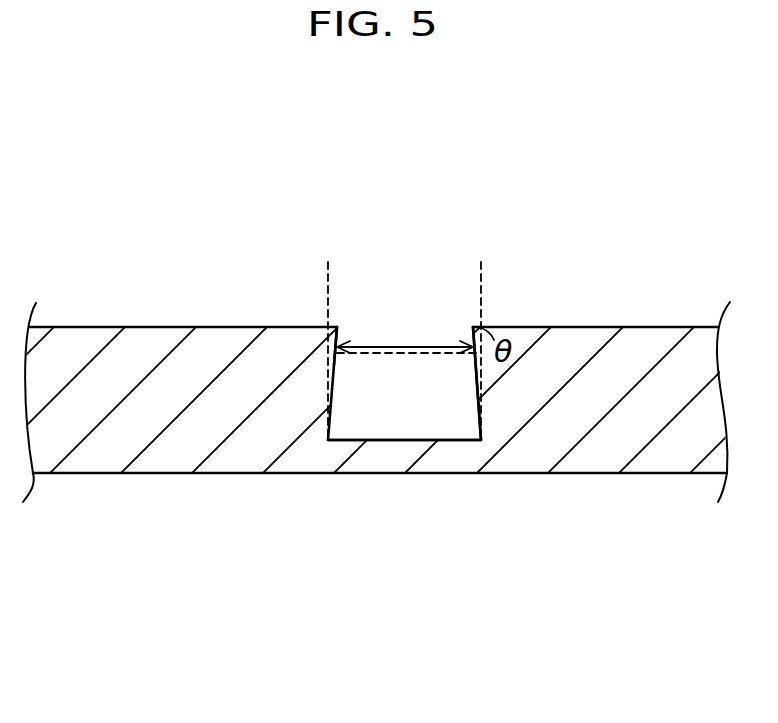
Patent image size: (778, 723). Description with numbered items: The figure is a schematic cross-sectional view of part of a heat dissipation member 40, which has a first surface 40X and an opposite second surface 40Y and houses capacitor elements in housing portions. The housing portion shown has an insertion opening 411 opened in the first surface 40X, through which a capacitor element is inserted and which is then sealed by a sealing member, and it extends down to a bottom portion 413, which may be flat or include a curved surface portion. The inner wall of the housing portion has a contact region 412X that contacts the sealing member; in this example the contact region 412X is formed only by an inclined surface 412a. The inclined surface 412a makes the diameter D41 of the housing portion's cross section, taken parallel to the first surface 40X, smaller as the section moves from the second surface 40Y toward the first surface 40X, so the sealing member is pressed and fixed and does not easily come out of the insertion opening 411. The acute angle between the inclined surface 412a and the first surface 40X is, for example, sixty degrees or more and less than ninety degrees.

The heat dissipation member 40 is at (640, 343).
The first surface 40X is at (170, 323).
The second surface 40Y is at (178, 478).
The insertion opening 411 is at (384, 322).
The contact region 412X is at (350, 337).
The inclined surface 412a is at (458, 380).
The bottom portion 413 is at (396, 426).
The diameter of a cross section of housing portion D41 is at (423, 347).